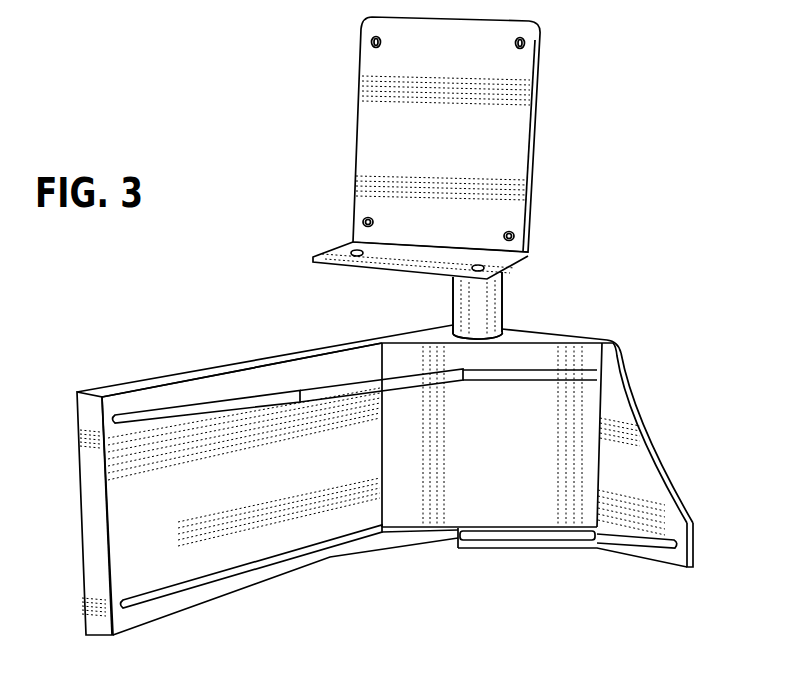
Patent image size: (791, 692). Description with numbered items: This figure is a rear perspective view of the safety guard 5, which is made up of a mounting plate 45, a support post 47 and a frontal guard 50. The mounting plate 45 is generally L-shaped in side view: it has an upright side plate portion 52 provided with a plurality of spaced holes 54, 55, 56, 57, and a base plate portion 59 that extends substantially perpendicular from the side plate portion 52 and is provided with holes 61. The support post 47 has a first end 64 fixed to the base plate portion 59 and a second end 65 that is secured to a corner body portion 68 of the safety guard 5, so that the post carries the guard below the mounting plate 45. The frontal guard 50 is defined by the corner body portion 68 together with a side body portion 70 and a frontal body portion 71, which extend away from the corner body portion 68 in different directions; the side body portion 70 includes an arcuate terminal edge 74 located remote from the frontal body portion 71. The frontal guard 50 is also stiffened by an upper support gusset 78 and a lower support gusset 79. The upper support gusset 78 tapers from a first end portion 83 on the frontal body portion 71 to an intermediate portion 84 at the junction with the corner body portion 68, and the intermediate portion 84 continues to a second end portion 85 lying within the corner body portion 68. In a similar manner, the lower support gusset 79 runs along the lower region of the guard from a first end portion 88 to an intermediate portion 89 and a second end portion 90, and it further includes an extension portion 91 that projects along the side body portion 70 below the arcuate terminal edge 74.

The safety guard 5 is at (647, 192).
The mounting plate 45 is at (332, 122).
The support post 47 is at (512, 302).
The frontal guard 50 is at (638, 358).
The side plate portion 52 is at (531, 142).
The hole 54 is at (371, 43).
The hole 55 is at (526, 43).
The hole 56 is at (514, 236).
The hole 57 is at (363, 222).
The base plate portion 59 is at (414, 258).
The holes 61 is at (352, 252).
The first end 64 is at (507, 280).
The second end 65 is at (505, 331).
The corner body portion 68 is at (510, 469).
The side body portion 70 is at (653, 488).
The frontal body portion 71 is at (212, 500).
The arcuate terminal edge 74 is at (650, 443).
The upper support gusset 78 is at (370, 400).
The lower support gusset 79 is at (357, 567).
The first end portion 83 is at (173, 410).
The intermediate portion 84 is at (382, 380).
The second end portion 85 is at (537, 381).
The first end portion 88 is at (193, 595).
The intermediate portion 89 is at (397, 537).
The second end portion 90 is at (525, 538).
The extension portion 91 is at (640, 541).